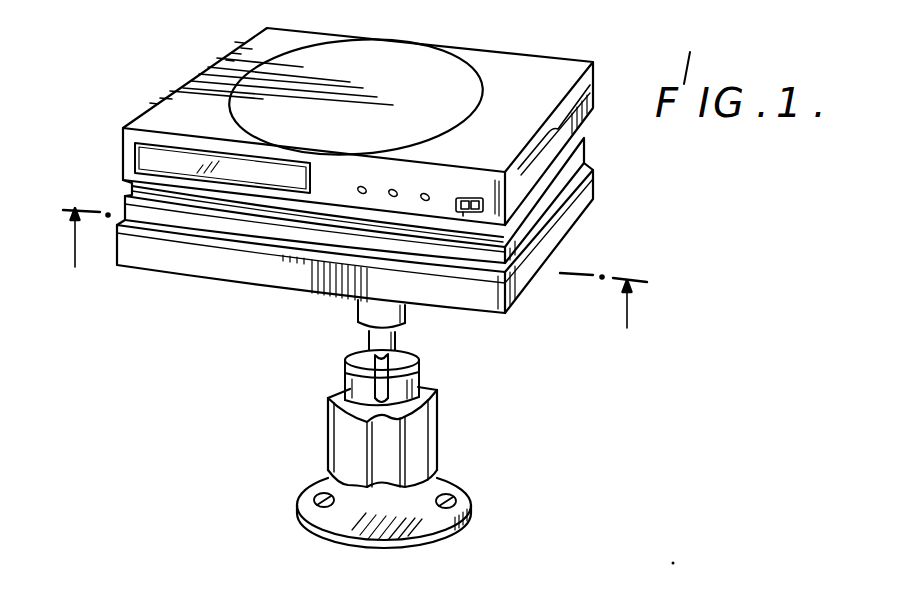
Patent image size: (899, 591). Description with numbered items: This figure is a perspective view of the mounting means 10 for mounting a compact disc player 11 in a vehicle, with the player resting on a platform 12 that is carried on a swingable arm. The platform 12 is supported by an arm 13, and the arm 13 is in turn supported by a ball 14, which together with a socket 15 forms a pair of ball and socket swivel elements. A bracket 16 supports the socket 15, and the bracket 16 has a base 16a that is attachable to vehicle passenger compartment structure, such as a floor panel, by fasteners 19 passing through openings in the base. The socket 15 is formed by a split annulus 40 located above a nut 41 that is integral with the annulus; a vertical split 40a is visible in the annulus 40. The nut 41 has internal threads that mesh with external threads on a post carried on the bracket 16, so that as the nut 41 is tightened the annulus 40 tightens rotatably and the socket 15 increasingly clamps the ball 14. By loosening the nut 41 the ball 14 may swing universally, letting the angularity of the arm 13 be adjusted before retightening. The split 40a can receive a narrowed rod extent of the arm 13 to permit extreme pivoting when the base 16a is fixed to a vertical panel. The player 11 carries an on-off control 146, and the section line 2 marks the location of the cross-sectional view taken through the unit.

The mounting means 10 is at (625, 197).
The compact disc player 11 is at (186, 72).
The platform 12 is at (160, 265).
The arm 13 is at (345, 313).
The ball 14 is at (402, 358).
The socket 15 is at (369, 358).
The bracket 16 is at (292, 490).
The base 16a is at (352, 538).
The fasteners 19 is at (447, 497).
The split annulus 40 is at (410, 364).
The vertical split 40a is at (378, 388).
The nut 41 is at (441, 418).
The on-off control 146 is at (470, 206).
The section line 2- 2 is at (355, 286).